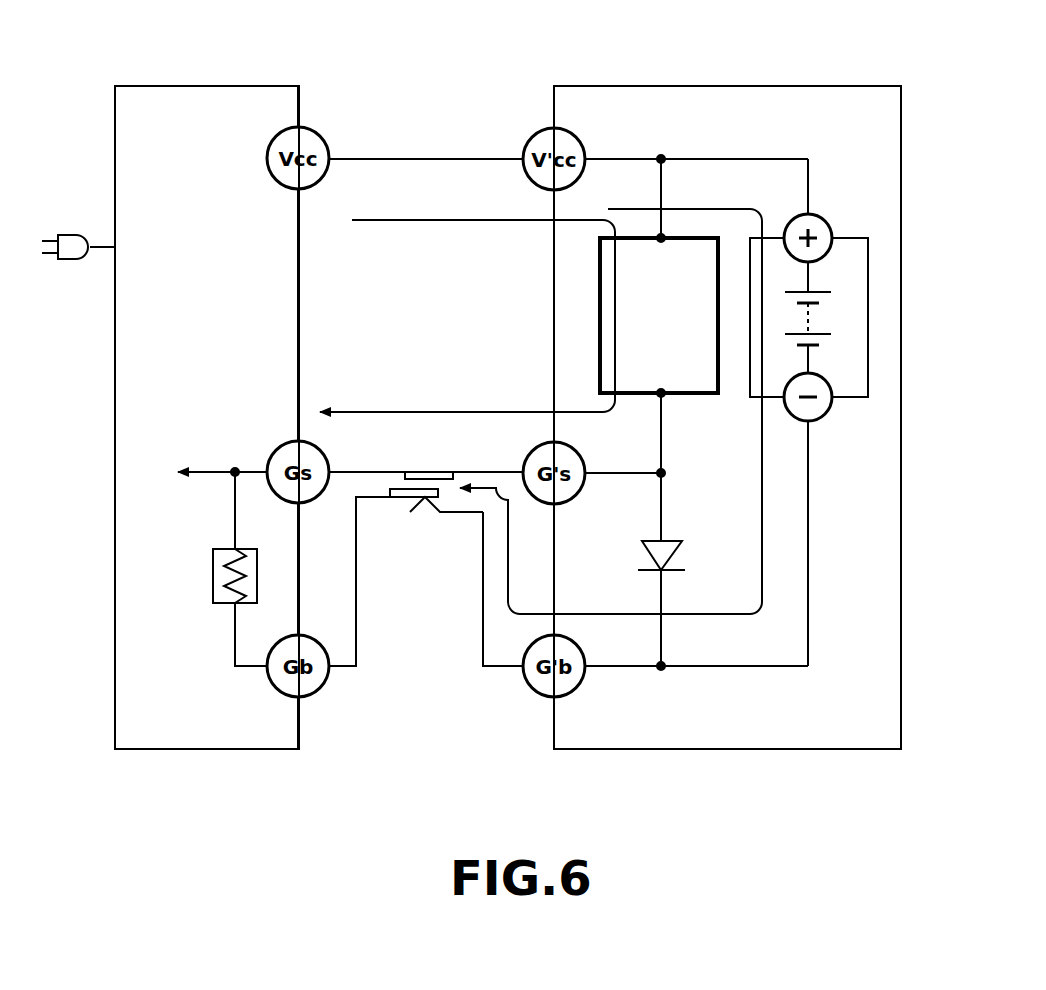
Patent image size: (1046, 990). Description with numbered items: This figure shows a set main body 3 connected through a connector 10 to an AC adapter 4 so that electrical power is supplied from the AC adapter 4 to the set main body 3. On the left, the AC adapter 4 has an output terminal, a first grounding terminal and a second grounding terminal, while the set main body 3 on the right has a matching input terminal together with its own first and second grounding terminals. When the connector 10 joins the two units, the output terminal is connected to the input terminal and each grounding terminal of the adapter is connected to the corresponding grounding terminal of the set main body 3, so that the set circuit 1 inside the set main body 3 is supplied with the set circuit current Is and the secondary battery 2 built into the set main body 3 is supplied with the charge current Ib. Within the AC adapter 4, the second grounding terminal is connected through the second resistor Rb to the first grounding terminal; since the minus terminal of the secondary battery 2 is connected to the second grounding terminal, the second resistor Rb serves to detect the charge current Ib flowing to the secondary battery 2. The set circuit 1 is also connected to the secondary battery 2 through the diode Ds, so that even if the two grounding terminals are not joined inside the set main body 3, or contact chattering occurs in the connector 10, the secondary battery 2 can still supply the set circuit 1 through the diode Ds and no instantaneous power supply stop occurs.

The set circuit 1 is at (692, 398).
The secondary battery 2 is at (848, 238).
The set main body 3 is at (700, 86).
The AC adapter 4 is at (236, 86).
The connector 10 is at (428, 522).
The second resistor Rb is at (213, 581).
The diode Ds is at (677, 552).
The set circuit current Is is at (436, 221).
The charge current Ib is at (688, 613).